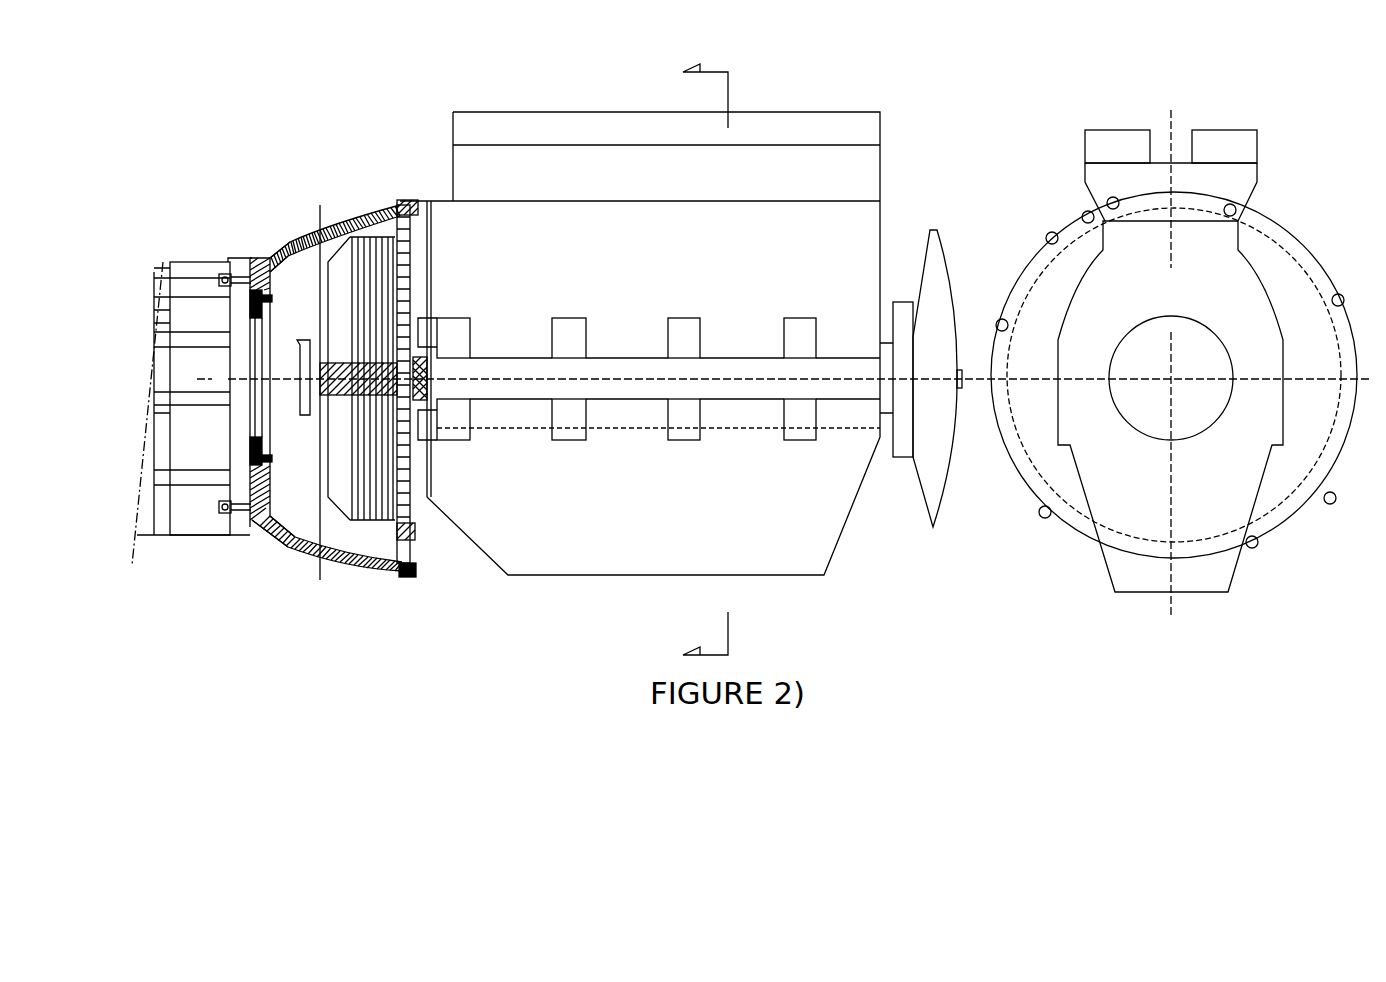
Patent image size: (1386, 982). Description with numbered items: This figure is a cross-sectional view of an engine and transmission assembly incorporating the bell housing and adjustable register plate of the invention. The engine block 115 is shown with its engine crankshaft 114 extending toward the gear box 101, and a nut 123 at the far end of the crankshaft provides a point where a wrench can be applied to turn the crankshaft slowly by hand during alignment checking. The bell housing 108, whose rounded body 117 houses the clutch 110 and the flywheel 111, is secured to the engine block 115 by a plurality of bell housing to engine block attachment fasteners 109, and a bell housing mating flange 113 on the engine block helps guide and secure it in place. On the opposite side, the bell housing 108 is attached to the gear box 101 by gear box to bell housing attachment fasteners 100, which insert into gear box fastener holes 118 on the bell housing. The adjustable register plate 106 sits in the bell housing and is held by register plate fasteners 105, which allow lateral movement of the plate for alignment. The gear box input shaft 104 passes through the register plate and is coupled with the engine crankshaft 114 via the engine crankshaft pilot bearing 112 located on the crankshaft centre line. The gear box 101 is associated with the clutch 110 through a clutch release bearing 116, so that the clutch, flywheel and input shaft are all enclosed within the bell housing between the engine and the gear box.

The gear box to bell housing attachment fasteners 100 is at (223, 262).
The gear box 101 is at (178, 260).
The gear box input shaft 104 is at (320, 205).
The register plate fasteners 105 is at (262, 518).
The register plate 106 is at (257, 262).
The bell housing 108 is at (365, 217).
The bell housing to engine block attachment fasteners 109 is at (402, 204).
The clutch 110 is at (343, 490).
The flywheel 111 is at (397, 572).
The engine crankshaft pilot bearing 112 is at (414, 355).
The bell housing mating flange 113 is at (424, 532).
The engine crankshaft 114 is at (450, 415).
The engine block 115 is at (533, 303).
The clutch release bearing 116 is at (303, 416).
The body 117 is at (294, 238).
The gear box fastener holes 118 is at (251, 259).
The nut 123 is at (955, 350).